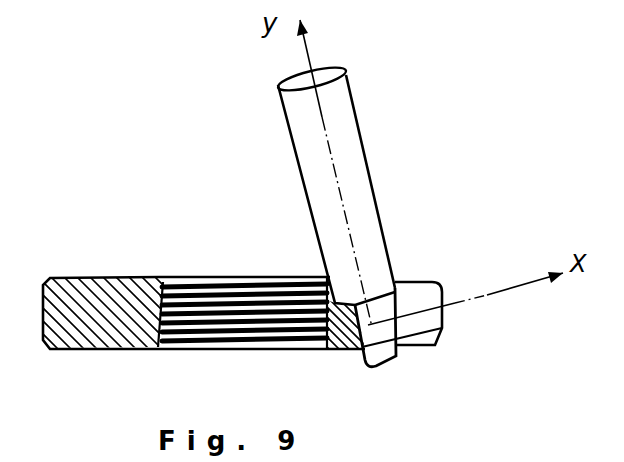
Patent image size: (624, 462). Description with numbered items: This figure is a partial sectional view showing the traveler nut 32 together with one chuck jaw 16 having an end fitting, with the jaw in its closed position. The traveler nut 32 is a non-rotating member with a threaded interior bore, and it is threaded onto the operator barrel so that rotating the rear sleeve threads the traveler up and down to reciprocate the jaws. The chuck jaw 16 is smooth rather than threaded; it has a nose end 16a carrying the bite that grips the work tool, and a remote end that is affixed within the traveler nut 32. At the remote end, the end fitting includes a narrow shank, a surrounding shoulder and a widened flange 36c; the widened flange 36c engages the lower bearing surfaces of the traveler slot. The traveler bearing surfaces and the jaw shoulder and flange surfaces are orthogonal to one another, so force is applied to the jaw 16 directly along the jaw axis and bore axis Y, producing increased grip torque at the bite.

The traveler nut 32 is at (133, 260).
The chuck jaw 16 is at (360, 183).
The widened flange 36c is at (380, 355).
The nose end 16a is at (592, 371).